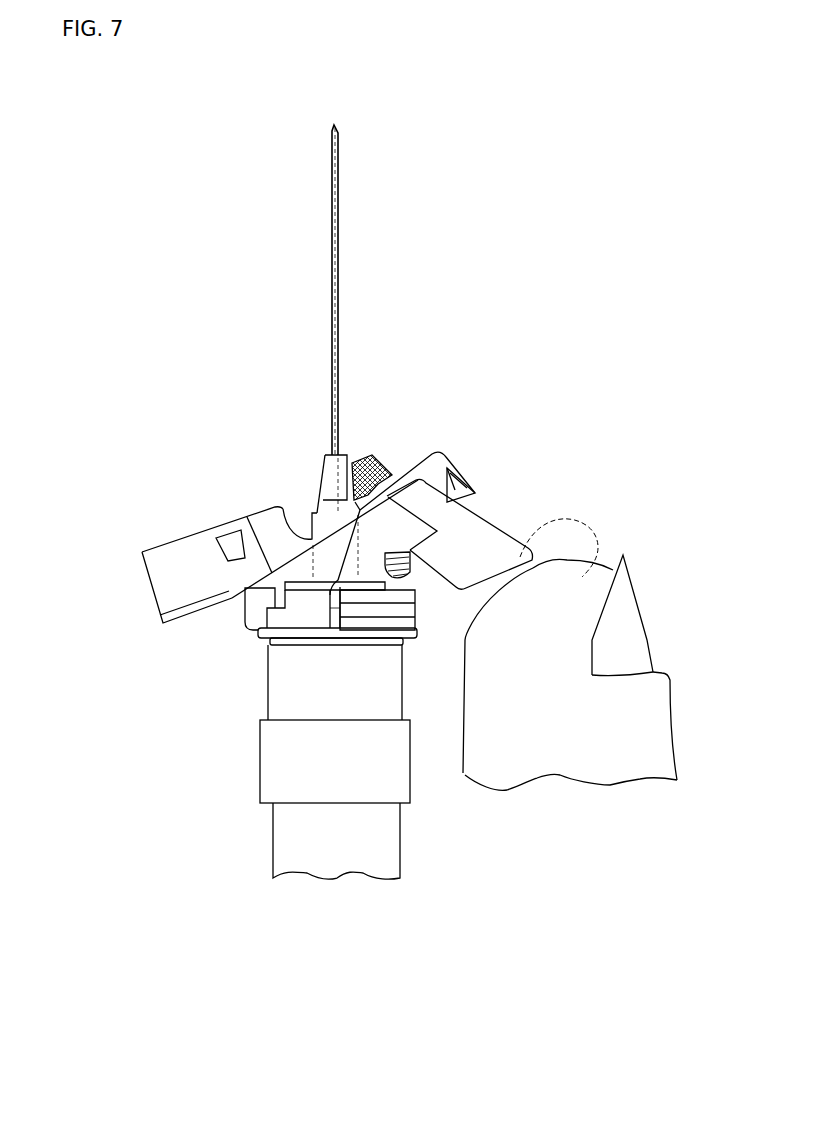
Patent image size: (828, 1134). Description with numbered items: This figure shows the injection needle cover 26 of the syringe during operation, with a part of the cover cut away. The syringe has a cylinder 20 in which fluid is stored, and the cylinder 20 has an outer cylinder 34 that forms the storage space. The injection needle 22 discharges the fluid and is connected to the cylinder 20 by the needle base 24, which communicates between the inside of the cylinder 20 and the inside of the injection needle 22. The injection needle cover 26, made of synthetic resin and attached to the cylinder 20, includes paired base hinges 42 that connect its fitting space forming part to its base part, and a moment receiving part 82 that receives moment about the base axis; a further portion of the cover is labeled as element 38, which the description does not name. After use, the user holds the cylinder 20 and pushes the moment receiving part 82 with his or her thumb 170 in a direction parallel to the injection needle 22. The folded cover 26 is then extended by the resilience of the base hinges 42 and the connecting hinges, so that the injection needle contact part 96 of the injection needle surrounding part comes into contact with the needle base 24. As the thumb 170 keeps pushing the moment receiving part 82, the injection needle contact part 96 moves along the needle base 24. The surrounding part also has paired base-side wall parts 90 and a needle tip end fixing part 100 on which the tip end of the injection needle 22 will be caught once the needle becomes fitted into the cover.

The cylinder 20 is at (272, 848).
The injection needle 22 is at (338, 297).
The needle base 24 is at (320, 452).
The injection needle cover 26 is at (215, 512).
The outer cylinder 34 is at (285, 583).
The arm 38 is at (402, 577).
The base hinges 42 is at (413, 633).
The moment receiving part 82 is at (536, 558).
The base-side wall parts 90 is at (445, 572).
The injection needle contact part 96 is at (375, 470).
The needle tip end fixing part 100 is at (226, 550).
The thumb 170 is at (580, 578).